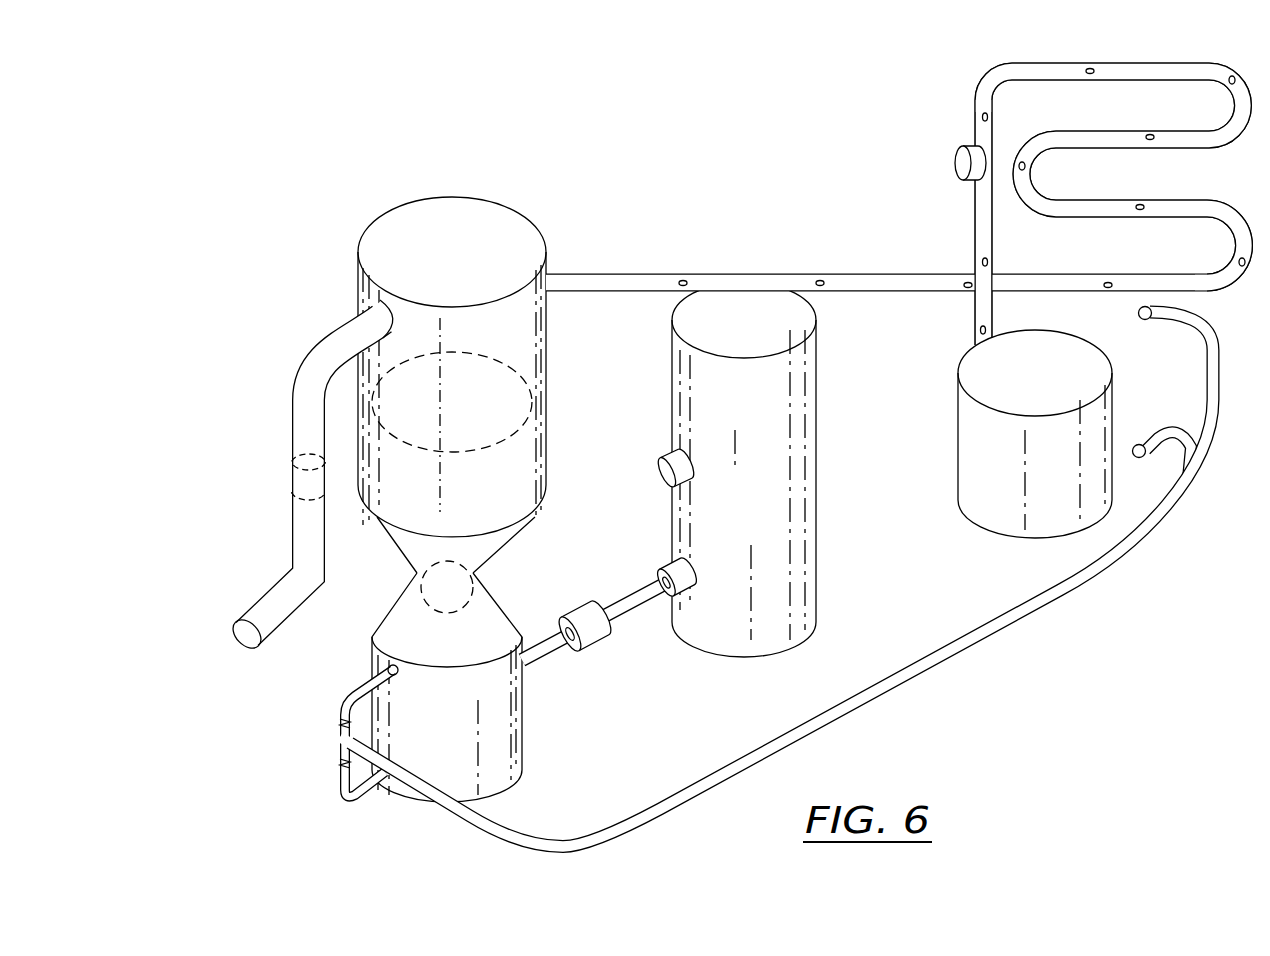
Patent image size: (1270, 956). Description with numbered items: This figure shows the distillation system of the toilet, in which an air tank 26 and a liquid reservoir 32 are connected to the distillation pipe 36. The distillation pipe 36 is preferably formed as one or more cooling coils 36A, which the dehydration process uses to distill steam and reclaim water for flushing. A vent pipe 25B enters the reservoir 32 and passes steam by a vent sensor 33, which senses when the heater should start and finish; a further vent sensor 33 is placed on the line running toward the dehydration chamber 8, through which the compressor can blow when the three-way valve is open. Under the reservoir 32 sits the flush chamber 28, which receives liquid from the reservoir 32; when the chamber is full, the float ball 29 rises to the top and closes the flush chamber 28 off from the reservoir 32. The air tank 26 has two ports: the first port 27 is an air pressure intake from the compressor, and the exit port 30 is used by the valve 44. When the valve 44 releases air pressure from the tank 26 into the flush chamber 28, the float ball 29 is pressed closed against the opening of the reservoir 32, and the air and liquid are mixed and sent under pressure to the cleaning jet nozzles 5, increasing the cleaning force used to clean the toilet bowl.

The cleaning jet nozzles 5 is at (1156, 320).
The dehydration chamber 8 is at (1041, 456).
The vent pipe 25B is at (250, 608).
The air tank 26 is at (745, 533).
The first port 27 is at (697, 455).
The flush chamber 28 is at (447, 744).
The float ball 29 is at (476, 580).
The exit port 30 is at (696, 562).
The liquid reservoir 32 is at (450, 506).
The vent sensor 33 is at (968, 147).
The distillation pipe 36 is at (612, 272).
The cooling coils 36A is at (1077, 131).
The valve 44 is at (574, 611).